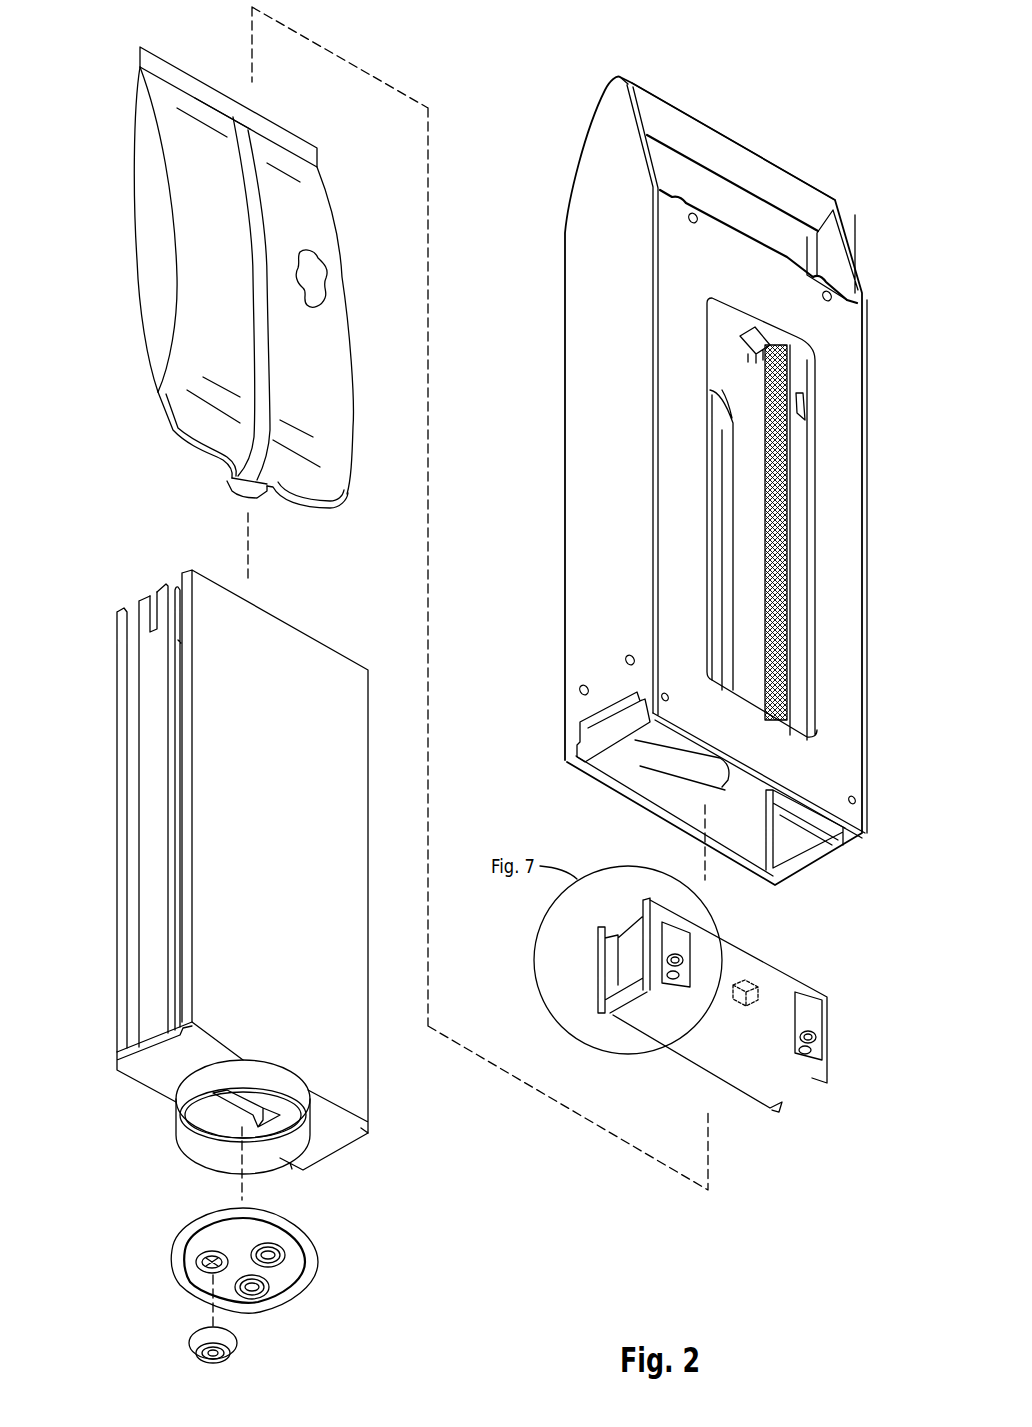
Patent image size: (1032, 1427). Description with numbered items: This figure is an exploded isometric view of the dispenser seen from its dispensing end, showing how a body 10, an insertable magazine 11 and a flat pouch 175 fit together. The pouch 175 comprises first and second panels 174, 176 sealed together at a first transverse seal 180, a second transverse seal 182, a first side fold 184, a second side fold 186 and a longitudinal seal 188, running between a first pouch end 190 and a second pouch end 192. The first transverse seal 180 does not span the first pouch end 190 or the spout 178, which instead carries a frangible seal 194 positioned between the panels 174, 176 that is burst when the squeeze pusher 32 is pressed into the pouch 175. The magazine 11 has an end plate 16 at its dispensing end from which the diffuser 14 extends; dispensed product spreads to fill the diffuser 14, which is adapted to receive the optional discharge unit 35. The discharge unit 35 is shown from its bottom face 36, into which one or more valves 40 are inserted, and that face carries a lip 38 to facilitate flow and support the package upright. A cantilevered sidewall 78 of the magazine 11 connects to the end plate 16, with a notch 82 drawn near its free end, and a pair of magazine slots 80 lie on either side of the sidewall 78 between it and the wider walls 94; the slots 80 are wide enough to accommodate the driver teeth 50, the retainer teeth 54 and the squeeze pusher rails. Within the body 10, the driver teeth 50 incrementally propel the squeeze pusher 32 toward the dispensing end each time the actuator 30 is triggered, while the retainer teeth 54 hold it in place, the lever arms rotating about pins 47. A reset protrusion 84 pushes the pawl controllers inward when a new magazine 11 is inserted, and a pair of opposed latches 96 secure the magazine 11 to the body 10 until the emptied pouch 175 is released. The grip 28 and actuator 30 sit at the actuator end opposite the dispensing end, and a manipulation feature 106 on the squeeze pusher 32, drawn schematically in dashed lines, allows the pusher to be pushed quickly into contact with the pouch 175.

The body 10 is at (842, 438).
The magazine 11 is at (76, 972).
The diffuser 14 is at (203, 1147).
The end plate 16 is at (153, 1073).
The grip 28 is at (768, 185).
The actuator 30 is at (707, 185).
The squeeze pusher 32 is at (820, 1118).
The discharge unit 35 is at (307, 1227).
The bottom face 36 is at (288, 1277).
The lip 38 is at (250, 1313).
The valve 40 is at (197, 1343).
The pin 47 is at (760, 337).
The driver teeth 50 is at (787, 494).
The retainer teeth 54 is at (767, 381).
The sidewall 78 is at (155, 770).
The magazine slots 80 is at (132, 688).
The notch 82 is at (152, 606).
The reset protrusion 84 is at (803, 398).
The wider walls 94 is at (352, 1060).
The latches 96 is at (610, 728).
The manipulation feature 106 is at (753, 987).
The first panel 174 is at (320, 389).
The pouch 175 is at (110, 150).
The second panel 176 is at (152, 310).
The spout 178 is at (207, 490).
The first transverse seal 180 is at (317, 279).
The second transverse seal 182 is at (158, 62).
The first side fold 184 is at (342, 254).
The second side fold 186 is at (135, 233).
The longitudinal seal 188 is at (253, 245).
The first pouch end 190 is at (295, 508).
The second pouch end 192 is at (222, 90).
The frangible seal 194 is at (243, 491).